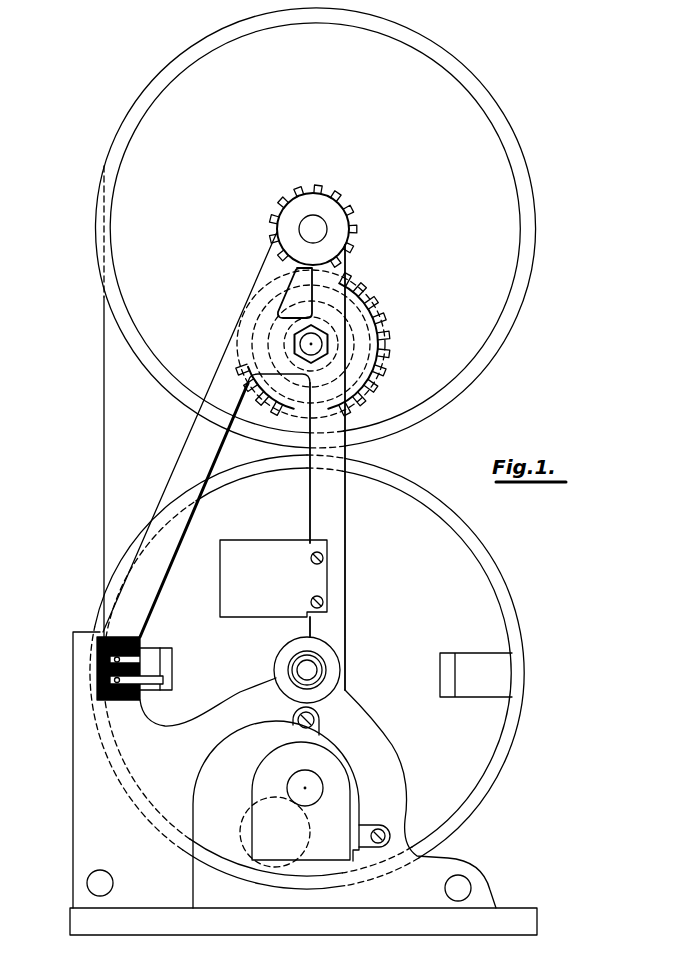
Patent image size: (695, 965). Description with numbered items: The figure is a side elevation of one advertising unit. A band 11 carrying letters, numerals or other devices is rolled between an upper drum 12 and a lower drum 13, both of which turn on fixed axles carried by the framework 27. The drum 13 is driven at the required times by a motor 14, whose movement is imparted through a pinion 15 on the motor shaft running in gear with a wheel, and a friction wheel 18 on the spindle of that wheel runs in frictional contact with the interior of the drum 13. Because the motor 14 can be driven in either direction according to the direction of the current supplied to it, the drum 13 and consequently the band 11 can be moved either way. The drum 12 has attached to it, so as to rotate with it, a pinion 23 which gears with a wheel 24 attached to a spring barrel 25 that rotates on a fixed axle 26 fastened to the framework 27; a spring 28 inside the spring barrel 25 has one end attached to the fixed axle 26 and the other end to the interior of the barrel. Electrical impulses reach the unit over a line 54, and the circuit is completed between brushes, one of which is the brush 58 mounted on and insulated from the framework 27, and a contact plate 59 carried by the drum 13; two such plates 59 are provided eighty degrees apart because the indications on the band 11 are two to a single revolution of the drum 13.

The band 11 is at (100, 400).
The drum 12 is at (500, 140).
The drum 13 is at (488, 595).
The motor 14 is at (347, 790).
The pinion 15 is at (293, 782).
The friction wheel 18 is at (242, 832).
The pinion 23 is at (353, 210).
The wheel 24 is at (375, 310).
The spring barrel 25 is at (365, 310).
The fixed axle 26 is at (308, 344).
The framework 27 is at (347, 452).
The spring 28 is at (272, 303).
The line 54 is at (148, 657).
The brush 58 is at (162, 678).
The contact plate 59 is at (170, 667).